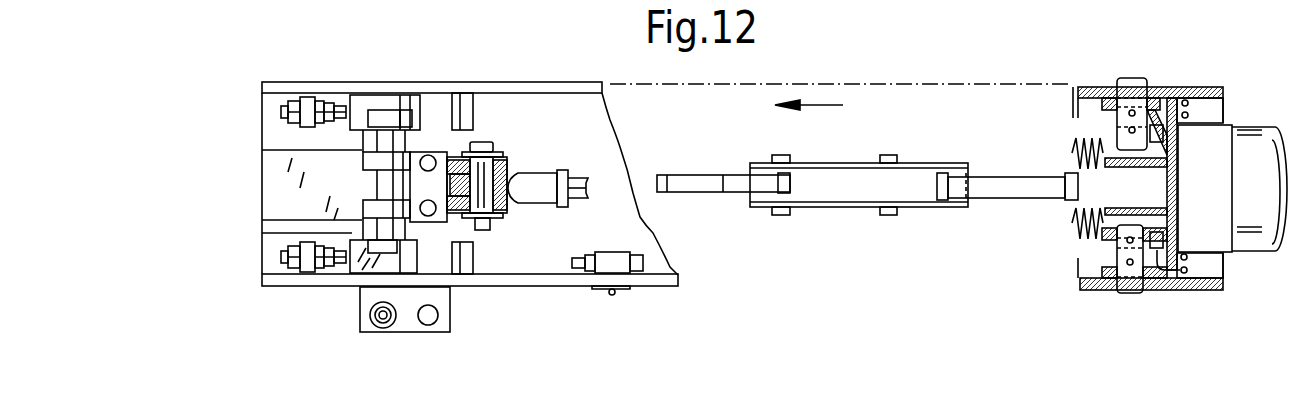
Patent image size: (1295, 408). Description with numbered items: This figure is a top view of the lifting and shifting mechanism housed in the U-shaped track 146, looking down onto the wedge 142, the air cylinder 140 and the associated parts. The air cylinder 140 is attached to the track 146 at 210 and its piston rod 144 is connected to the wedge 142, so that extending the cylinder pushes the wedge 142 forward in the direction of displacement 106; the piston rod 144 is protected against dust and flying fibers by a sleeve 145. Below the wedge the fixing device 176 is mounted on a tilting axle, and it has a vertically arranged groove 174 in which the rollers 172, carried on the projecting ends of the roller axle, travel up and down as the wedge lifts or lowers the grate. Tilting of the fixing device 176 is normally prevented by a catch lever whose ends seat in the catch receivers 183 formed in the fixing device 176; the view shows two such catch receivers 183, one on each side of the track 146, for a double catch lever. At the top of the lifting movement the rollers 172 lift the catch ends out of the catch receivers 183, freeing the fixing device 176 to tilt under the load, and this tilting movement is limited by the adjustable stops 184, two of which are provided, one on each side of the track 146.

The direction of displacement 106 is at (820, 104).
The air cylinder 140 is at (1250, 142).
The wedge 142 is at (273, 183).
The piston rod 144 is at (540, 180).
The sleeve 145 is at (1077, 223).
The U-shaped track 146 is at (584, 90).
The rollers 172 is at (382, 112).
The groove 174 is at (407, 120).
The fixing device 176 is at (415, 117).
The catch receiver 183 is at (393, 107).
The adjustable stop 184 is at (347, 98).
The attachment point 210 is at (1128, 288).